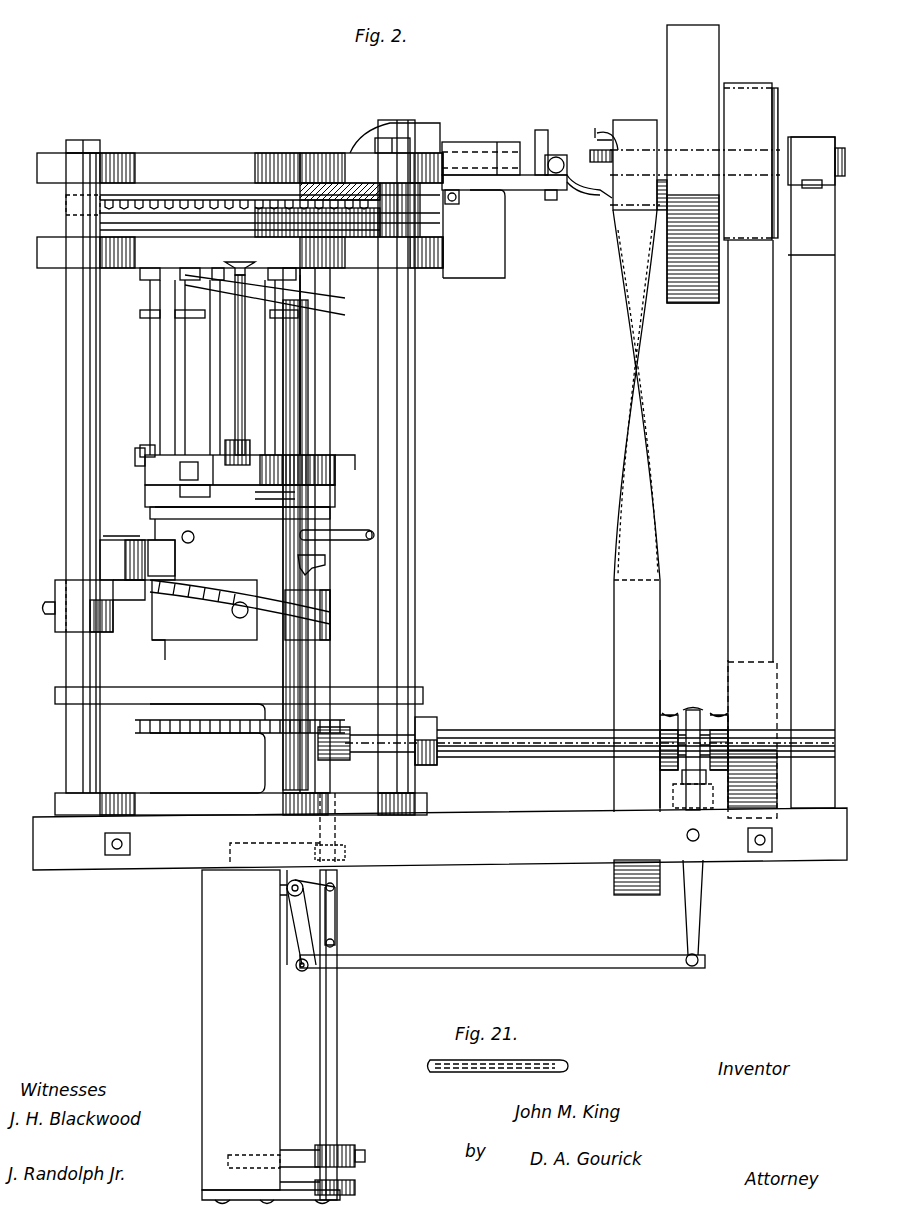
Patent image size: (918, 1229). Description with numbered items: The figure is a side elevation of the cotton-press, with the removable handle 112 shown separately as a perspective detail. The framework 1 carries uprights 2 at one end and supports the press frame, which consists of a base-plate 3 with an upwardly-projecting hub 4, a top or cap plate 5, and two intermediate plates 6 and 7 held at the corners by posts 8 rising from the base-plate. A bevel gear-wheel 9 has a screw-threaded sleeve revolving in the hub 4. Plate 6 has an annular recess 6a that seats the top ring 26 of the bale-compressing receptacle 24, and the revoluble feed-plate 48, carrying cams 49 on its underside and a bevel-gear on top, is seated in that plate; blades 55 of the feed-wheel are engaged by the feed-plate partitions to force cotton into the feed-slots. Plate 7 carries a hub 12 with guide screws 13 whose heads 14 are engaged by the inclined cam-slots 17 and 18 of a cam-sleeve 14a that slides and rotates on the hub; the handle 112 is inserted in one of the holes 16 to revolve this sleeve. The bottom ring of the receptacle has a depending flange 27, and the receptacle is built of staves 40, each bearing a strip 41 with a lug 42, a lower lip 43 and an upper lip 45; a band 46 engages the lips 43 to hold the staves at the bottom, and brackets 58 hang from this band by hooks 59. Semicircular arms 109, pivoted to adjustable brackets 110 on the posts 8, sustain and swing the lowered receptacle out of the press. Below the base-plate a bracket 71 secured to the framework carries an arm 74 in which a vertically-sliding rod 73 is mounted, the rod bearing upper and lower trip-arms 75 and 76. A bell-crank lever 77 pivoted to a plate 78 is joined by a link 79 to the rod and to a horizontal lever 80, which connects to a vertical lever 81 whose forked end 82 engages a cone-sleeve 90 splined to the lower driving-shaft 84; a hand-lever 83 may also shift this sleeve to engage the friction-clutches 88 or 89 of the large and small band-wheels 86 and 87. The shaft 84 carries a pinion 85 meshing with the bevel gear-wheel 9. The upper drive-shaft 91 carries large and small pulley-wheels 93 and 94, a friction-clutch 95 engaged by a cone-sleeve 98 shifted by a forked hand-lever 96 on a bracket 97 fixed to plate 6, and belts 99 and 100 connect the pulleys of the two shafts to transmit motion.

In FIG. 2, the framework 1 is at (530, 850).
In FIG. 2, the uprights 2 is at (816, 472).
In FIG. 2, the base-plate 3 is at (425, 803).
In FIG. 2, the hub 4 is at (250, 770).
In FIG. 2, the top or cap plate 5 is at (145, 165).
In FIG. 2, the intermediate plate 6 is at (440, 250).
In FIG. 2, the annular recess 6a is at (232, 260).
In FIG. 2, the intermediate plate 7 is at (423, 694).
In FIG. 2, the posts 8 is at (78, 437).
In FIG. 2, the bevel gear-wheel 9 is at (135, 725).
In FIG. 2, the hub 12 is at (330, 672).
In FIG. 2, the guide pins or screws 13 is at (240, 618).
In FIG. 2, the heads 14 is at (190, 612).
In FIG. 2, the cam-sleeve 14a is at (330, 612).
In FIG. 2, the holes 16 is at (195, 537).
In FIG. 2, the inclined cam-slot 17 is at (185, 602).
In FIG. 2, the inclined cam-slot 18 is at (318, 570).
In FIG. 2, the bale-compressing chamber or receptacle 24 is at (210, 378).
In FIG. 2, the top ring 26 is at (345, 298).
In FIG. 2, the downwardly-depending flange 27 is at (150, 512).
In FIG. 2, the staves or slats 40 is at (212, 385).
In FIG. 2, the strip 41 is at (152, 335).
In FIG. 2, the lug 42 is at (145, 315).
In FIG. 2, the lip 43 is at (148, 497).
In FIG. 2, the upwardly-projecting lip 45 is at (373, 361).
In FIG. 2, the band 46 is at (148, 475).
In FIG. 2, the revoluble feed-plate 48 is at (95, 213).
In FIG. 2, the cams 49 is at (385, 228).
In FIG. 2, the blades 55 is at (228, 160).
In FIG. 2, the brackets 58 is at (160, 445).
In FIG. 2, the hook 59 is at (140, 450).
In FIG. 2, the downwardly-extending bracket 71 is at (202, 990).
In FIG. 2, the vertically-sliding rod 73 is at (337, 1010).
In FIG. 2, the arm 74 is at (355, 1188).
In FIG. 2, the upper trip-arm 75 is at (265, 850).
In FIG. 2, the lower trip-arm 76 is at (365, 1158).
In FIG. 2, the bell-crank lever 77 is at (294, 936).
In FIG. 2, the plate 78 is at (280, 890).
In FIG. 2, the link 79 is at (337, 912).
In FIG. 2, the horizontal lever 80 is at (515, 948).
In FIG. 2, the vertical lever 81 is at (700, 895).
In FIG. 2, the forked upper end 82 is at (691, 710).
In FIG. 2, the hand-lever 83 is at (680, 777).
In FIG. 2, the lower driving-shaft 84 is at (532, 728).
In FIG. 2, the pinion 85 is at (340, 760).
In FIG. 2, the large band or pulley wheel 86 is at (625, 707).
In FIG. 2, the small band or pulley wheel 87 is at (730, 662).
In FIG. 2, the friction-clutch 88 is at (668, 713).
In FIG. 2, the friction-clutch 89 is at (718, 713).
In FIG. 2, the cone-sleeve 90 is at (682, 740).
In FIG. 2, the upper drive-shaft 91 is at (527, 160).
In FIG. 2, the large pulley-wheel 93 is at (667, 120).
In FIG. 2, the small pulley-wheel 94 is at (778, 100).
In FIG. 2, the friction-clutch 95 is at (599, 138).
In FIG. 2, the forked hand-lever 96 is at (553, 172).
In FIG. 2, the bracket 97 is at (497, 190).
In FIG. 2, the cone-sleeve 98 is at (575, 195).
In FIG. 2, the belt 99 is at (620, 500).
In FIG. 2, the belt 100 is at (731, 492).
In FIG. 2, the semicircular arms 109 is at (175, 560).
In FIG. 2, the adjustable bracket 110 is at (72, 592).
In FIG. 2, the removable handle 112 is at (373, 535).
In FIG. 21, the removable handle 112 is at (503, 1072).